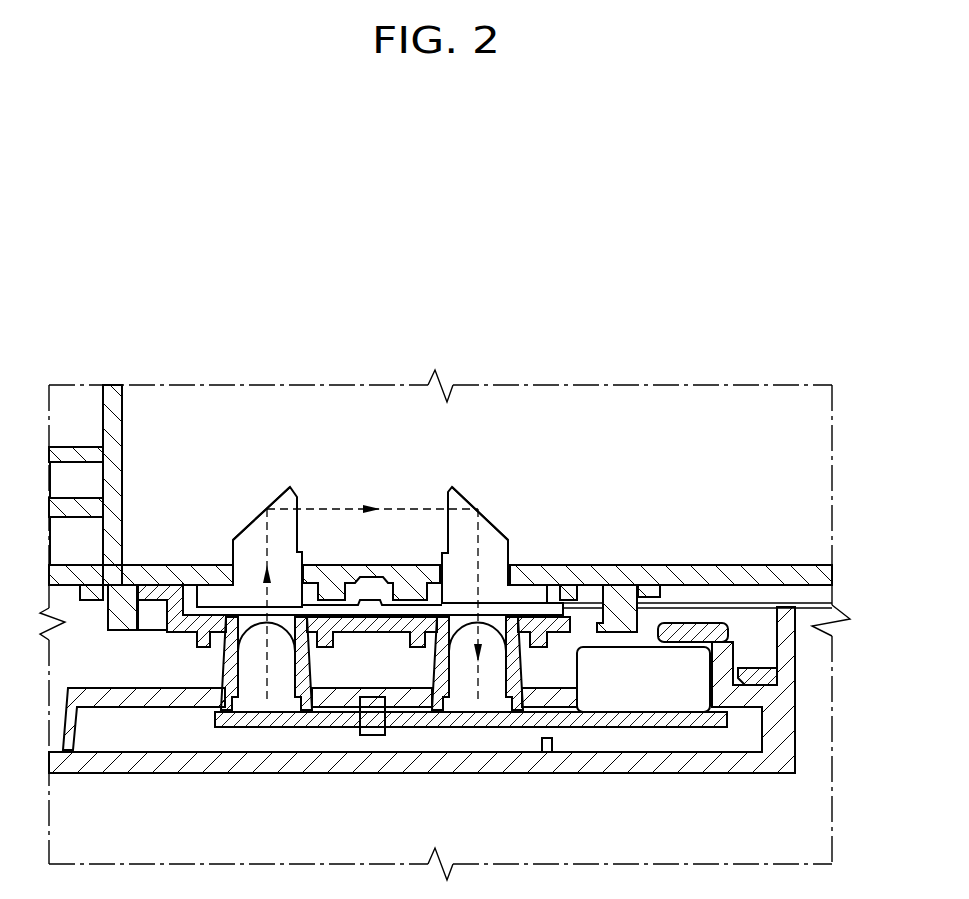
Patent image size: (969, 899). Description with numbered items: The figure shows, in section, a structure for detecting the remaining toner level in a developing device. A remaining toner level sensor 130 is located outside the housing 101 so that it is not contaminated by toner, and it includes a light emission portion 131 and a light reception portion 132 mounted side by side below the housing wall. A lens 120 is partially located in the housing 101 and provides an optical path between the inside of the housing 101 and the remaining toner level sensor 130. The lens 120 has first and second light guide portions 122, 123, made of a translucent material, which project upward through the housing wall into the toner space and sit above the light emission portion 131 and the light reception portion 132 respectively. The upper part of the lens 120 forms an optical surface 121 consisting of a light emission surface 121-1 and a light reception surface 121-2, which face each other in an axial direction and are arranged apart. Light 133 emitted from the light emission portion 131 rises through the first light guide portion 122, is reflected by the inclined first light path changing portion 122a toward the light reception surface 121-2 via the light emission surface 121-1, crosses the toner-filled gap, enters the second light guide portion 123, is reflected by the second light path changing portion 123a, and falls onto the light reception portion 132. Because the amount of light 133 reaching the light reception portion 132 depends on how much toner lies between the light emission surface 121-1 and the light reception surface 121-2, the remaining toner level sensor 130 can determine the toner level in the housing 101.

The housing 101 is at (766, 554).
The lens 120 is at (277, 474).
The optical surface 121 is at (445, 437).
The light emission surface 121-1 is at (300, 503).
The light reception surface 121-2 is at (450, 498).
The first light guide portion 122 is at (232, 552).
The first light path changing portion 122a is at (248, 527).
The second light guide portion 123 is at (510, 553).
The second light path changing portion 123a is at (485, 527).
The remaining toner level sensor 130 is at (418, 734).
The light emission portion 131 is at (257, 692).
The light reception portion 132 is at (487, 700).
The light 133 is at (346, 511).